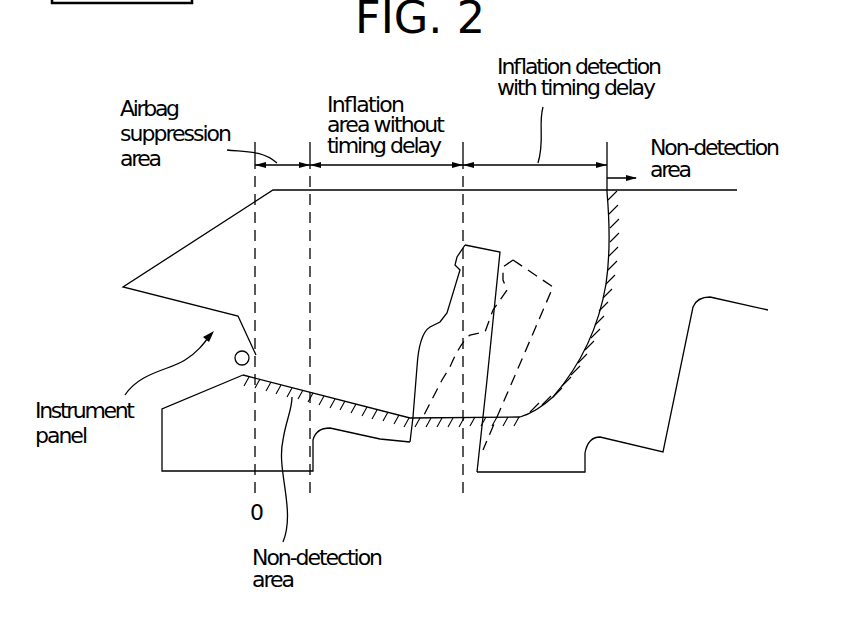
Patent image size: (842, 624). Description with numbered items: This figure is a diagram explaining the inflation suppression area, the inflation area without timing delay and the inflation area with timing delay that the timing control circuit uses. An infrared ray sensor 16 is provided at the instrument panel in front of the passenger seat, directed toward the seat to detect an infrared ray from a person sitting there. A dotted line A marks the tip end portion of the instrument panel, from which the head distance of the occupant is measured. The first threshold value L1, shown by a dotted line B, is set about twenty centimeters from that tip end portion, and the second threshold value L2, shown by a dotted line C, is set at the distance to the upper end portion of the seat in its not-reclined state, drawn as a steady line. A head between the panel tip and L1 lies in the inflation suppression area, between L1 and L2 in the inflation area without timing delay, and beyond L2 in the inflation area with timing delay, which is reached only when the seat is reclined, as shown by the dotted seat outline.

The infrared ray sensor 16 is at (237, 364).
The dotted line A is at (255, 147).
The dotted line B is at (310, 147).
The dotted line C is at (463, 147).
The first threshold value L1 is at (313, 350).
The second threshold value L2 is at (465, 350).